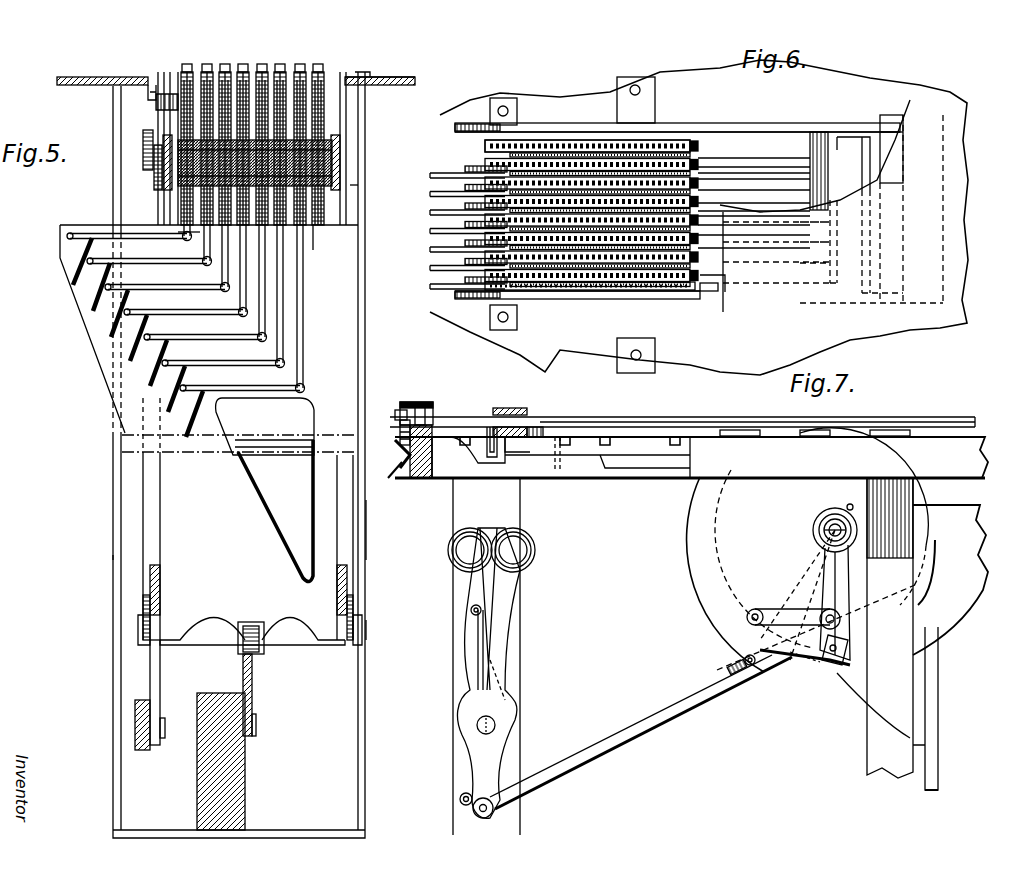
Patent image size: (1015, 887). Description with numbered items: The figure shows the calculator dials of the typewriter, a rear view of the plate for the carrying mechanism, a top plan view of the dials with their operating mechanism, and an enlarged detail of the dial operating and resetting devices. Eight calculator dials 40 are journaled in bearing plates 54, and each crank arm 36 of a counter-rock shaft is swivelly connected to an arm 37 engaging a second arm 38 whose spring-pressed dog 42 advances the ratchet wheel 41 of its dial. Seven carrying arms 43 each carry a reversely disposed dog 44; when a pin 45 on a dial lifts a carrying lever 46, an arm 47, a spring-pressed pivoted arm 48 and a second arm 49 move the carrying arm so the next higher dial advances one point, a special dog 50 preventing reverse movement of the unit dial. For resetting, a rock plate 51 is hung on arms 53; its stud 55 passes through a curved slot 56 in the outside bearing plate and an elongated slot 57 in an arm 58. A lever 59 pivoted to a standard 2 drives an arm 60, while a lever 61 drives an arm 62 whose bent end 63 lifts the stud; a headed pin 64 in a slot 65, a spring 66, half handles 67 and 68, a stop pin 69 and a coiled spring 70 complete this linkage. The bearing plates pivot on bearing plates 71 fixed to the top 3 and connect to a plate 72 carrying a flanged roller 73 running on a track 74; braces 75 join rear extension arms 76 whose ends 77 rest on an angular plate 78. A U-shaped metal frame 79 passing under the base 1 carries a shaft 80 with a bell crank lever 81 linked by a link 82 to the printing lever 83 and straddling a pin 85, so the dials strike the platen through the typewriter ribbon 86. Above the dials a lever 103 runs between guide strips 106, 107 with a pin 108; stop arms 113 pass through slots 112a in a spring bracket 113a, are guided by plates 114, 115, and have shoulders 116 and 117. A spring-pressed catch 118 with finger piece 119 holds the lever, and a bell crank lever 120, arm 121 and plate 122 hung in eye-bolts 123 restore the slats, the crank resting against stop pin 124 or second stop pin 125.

In FIG. 5, the base 1 is at (245, 810).
In FIG. 7, the standard 2 is at (453, 508).
In FIG. 5, the top 3 is at (415, 80).
In FIG. 7, the top 3 is at (982, 455).
In FIG. 5, the crank arm 36 is at (352, 190).
In FIG. 6, the crank arm 36 is at (440, 196).
In FIG. 6, the arm 37 is at (478, 168).
In FIG. 5, the second arm 38 is at (207, 72).
In FIG. 6, the second arm 38 is at (540, 292).
In FIG. 5, the calculator dial 40 is at (244, 72).
In FIG. 6, the calculator dial 40 is at (585, 140).
In FIG. 7, the calculator dial 40 is at (912, 490).
In FIG. 5, the ratchet wheel 41 is at (322, 142).
In FIG. 6, the ratchet wheel 41 is at (545, 140).
In FIG. 5, the spring-pressed dog 42 is at (282, 72).
In FIG. 6, the spring-pressed dog 42 is at (500, 285).
In FIG. 5, the carrying arm 43 is at (178, 190).
In FIG. 6, the carrying arm 43 is at (690, 158).
In FIG. 5, the spring-pressed dog 44 is at (340, 158).
In FIG. 6, the spring-pressed dog 44 is at (668, 140).
In FIG. 5, the pin 45 is at (184, 70).
In FIG. 6, the pin 45 is at (485, 148).
In FIG. 7, the pin 45 is at (800, 432).
In FIG. 5, the carrying lever 46 is at (158, 175).
In FIG. 6, the carrying lever 46 is at (750, 203).
In FIG. 5, the arm 47 is at (185, 240).
In FIG. 6, the arm 47 is at (690, 172).
In FIG. 5, the spring-pressed pivoted arm 48 is at (168, 312).
In FIG. 5, the second arm 49 is at (300, 300).
In FIG. 6, the second arm 49 is at (690, 182).
In FIG. 5, the spring-pressed dog 50 is at (172, 102).
In FIG. 6, the spring-pressed dog 50 is at (623, 296).
In FIG. 7, the rock plate 51 is at (735, 640).
In FIG. 5, the arm 53 is at (340, 205).
In FIG. 6, the arm 53 is at (562, 140).
In FIG. 7, the arm 53 is at (780, 600).
In FIG. 5, the bearing plate 54 is at (162, 78).
In FIG. 6, the bearing plate 54 is at (470, 125).
In FIG. 7, the bearing plate 54 is at (722, 580).
In FIG. 7, the stud 55 is at (828, 660).
In FIG. 7, the curved slot 56 is at (925, 592).
In FIG. 7, the elongated slot 57 is at (852, 648).
In FIG. 5, the arm 58 is at (150, 140).
In FIG. 7, the arm 58 is at (848, 596).
In FIG. 7, the lever 59 is at (470, 668).
In FIG. 7, the arm 60 is at (800, 630).
In FIG. 7, the lever 61 is at (505, 668).
In FIG. 7, the arm 62 is at (640, 718).
In FIG. 7, the bent end 63 is at (800, 660).
In FIG. 7, the headed pin 64 is at (742, 678).
In FIG. 7, the slot 65 is at (740, 664).
In FIG. 7, the spring 66 is at (478, 650).
In FIG. 7, the half handle 67 is at (460, 555).
In FIG. 7, the half handle 68 is at (535, 558).
In FIG. 7, the stop pin 69 is at (458, 798).
In FIG. 7, the coiled spring 70 is at (828, 520).
In FIG. 5, the bearing plate 71 is at (150, 88).
In FIG. 6, the bearing plate 71 is at (505, 120).
In FIG. 7, the bearing plate 71 is at (730, 430).
In FIG. 5, the plate 72 is at (248, 500).
In FIG. 7, the plate 72 is at (940, 732).
In FIG. 5, the flanged roller 73 is at (262, 652).
In FIG. 5, the track 74 is at (256, 705).
In FIG. 5, the brace 75 is at (160, 605).
In FIG. 5, the rear extension arm 76 is at (168, 180).
In FIG. 6, the rear extension arm 76 is at (778, 124).
In FIG. 7, the rear extension arm 76 is at (978, 548).
In FIG. 6, the end 77 is at (890, 125).
In FIG. 6, the angular plate 78 is at (895, 150).
In FIG. 5, the U-shaped metal frame 79 is at (113, 555).
In FIG. 6, the U-shaped metal frame 79 is at (648, 105).
In FIG. 7, the U-shaped metal frame 79 is at (366, 560).
In FIG. 5, the shaft 80 is at (262, 448).
In FIG. 5, the bell crank lever 81 is at (148, 538).
In FIG. 7, the bell crank lever 81 is at (366, 535).
In FIG. 5, the link 82 is at (160, 690).
In FIG. 5, the printing lever 83 is at (145, 750).
In FIG. 5, the pin 85 is at (362, 630).
In FIG. 7, the pin 85 is at (366, 630).
In FIG. 7, the typewriter ribbon 86 is at (830, 424).
In FIG. 7, the lever 103 is at (656, 424).
In FIG. 7, the guide strip 106 is at (515, 410).
In FIG. 7, the guide strip 107 is at (525, 440).
In FIG. 7, the pin 108 is at (500, 430).
In FIG. 7, the slot 112a is at (706, 430).
In FIG. 7, the stop arm 113 is at (580, 462).
In FIG. 7, the spring bracket 113a is at (695, 460).
In FIG. 7, the plate 114 is at (565, 470).
In FIG. 7, the plate 115 is at (458, 458).
In FIG. 7, the shoulder 116 is at (675, 450).
In FIG. 7, the shoulder 117 is at (500, 470).
In FIG. 7, the spring-pressed catch 118 is at (432, 412).
In FIG. 7, the finger piece 119 is at (420, 402).
In FIG. 7, the bell crank lever 120 is at (405, 402).
In FIG. 7, the arm 121 is at (395, 480).
In FIG. 7, the plate 122 is at (402, 450).
In FIG. 7, the eye-bolt 123 is at (410, 470).
In FIG. 7, the stop pin 124 is at (405, 426).
In FIG. 7, the second stop pin 125 is at (405, 414).